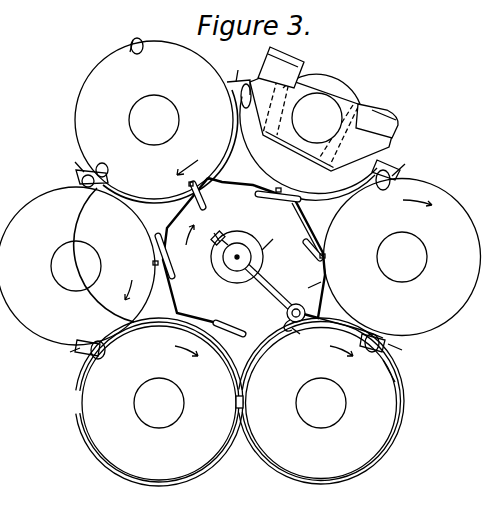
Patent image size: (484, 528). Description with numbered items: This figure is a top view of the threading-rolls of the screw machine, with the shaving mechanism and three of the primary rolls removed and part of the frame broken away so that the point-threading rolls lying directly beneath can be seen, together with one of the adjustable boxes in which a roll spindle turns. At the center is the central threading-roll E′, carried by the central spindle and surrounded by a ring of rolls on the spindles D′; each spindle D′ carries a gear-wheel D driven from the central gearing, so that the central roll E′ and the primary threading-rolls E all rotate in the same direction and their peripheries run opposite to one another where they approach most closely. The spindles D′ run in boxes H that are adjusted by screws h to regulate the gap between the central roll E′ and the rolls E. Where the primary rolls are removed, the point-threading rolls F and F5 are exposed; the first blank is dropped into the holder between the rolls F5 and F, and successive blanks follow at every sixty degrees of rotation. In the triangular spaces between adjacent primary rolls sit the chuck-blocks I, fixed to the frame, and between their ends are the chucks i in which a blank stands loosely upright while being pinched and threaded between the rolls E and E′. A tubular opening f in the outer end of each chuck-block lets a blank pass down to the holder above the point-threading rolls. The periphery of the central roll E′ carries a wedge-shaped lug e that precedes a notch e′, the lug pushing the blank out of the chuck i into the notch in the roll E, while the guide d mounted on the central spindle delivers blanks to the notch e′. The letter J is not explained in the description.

The primary threading-roll E is at (240, 262).
The central threading-roll E′ is at (228, 189).
The point-threading roll F is at (159, 403).
The point-threading roll F5 is at (321, 403).
The gear-wheel D is at (317, 118).
The spindle D′ is at (239, 261).
The box H is at (316, 133).
The adjusting-screw h is at (327, 90).
The chuck-block I is at (234, 240).
The pawl J is at (239, 258).
The chuck i is at (259, 218).
The guide d is at (266, 285).
The central hub d′ is at (237, 257).
The lug e is at (279, 329).
The notch e′ is at (304, 302).
The tubular opening f is at (235, 211).